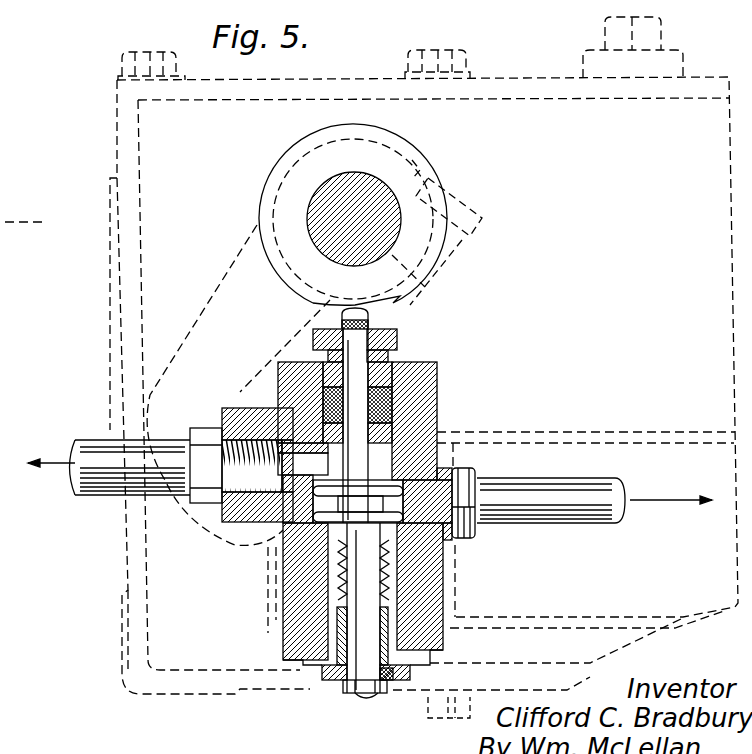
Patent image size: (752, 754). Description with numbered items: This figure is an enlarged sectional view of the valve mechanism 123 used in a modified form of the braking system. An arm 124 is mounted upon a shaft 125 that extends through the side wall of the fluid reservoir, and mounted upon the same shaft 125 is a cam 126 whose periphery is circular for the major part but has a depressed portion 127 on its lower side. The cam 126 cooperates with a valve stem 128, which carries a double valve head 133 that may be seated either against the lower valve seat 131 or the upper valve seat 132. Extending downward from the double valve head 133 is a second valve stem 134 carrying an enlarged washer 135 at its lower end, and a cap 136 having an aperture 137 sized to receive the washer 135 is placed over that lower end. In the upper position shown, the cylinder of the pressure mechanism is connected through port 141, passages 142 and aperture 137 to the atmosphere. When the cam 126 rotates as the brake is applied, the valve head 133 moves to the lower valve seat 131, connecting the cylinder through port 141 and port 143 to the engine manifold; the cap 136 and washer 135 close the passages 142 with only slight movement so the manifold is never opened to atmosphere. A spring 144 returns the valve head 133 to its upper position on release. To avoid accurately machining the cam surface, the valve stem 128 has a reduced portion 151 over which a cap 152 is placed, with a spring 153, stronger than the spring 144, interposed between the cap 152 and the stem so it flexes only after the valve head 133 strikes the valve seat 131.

The valve mechanism 123 is at (435, 395).
The arm 124 is at (236, 262).
The shaft 125 is at (338, 192).
The cam 126 is at (410, 170).
The depressed portion 127 is at (336, 302).
The valve stem 128 is at (400, 380).
The valve seat 131 is at (452, 548).
The valve seat 132 is at (450, 484).
The double valve head 133 is at (320, 507).
The valve stem 134 is at (360, 645).
The washer 135 is at (345, 690).
The cap 136 is at (424, 677).
The aperture 137 is at (393, 684).
The port 141 is at (475, 492).
The passages 142 is at (300, 654).
The port 143 is at (280, 398).
The spring 144 is at (345, 578).
The reduced portion 151 is at (398, 340).
The cap 152 is at (342, 318).
The spring 153 is at (342, 338).